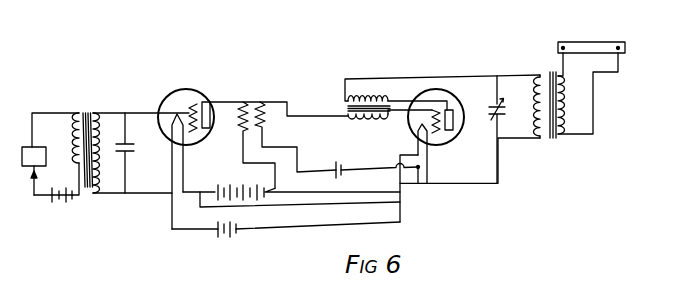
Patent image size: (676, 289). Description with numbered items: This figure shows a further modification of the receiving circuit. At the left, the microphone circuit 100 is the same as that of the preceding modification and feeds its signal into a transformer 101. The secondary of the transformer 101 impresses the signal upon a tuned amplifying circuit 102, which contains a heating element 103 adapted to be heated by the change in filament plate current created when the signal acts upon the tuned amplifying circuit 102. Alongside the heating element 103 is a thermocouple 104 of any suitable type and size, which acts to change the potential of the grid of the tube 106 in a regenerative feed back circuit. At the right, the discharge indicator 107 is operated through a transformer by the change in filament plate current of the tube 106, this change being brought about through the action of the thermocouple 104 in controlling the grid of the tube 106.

The microphone circuit 100 is at (50, 154).
The transformer 101 is at (83, 115).
The tuned amplifying circuit 102 is at (143, 153).
The heating element 103 is at (243, 99).
The thermocouple 104 is at (261, 100).
The tube 106 is at (429, 89).
The discharge indicator 107 is at (590, 42).